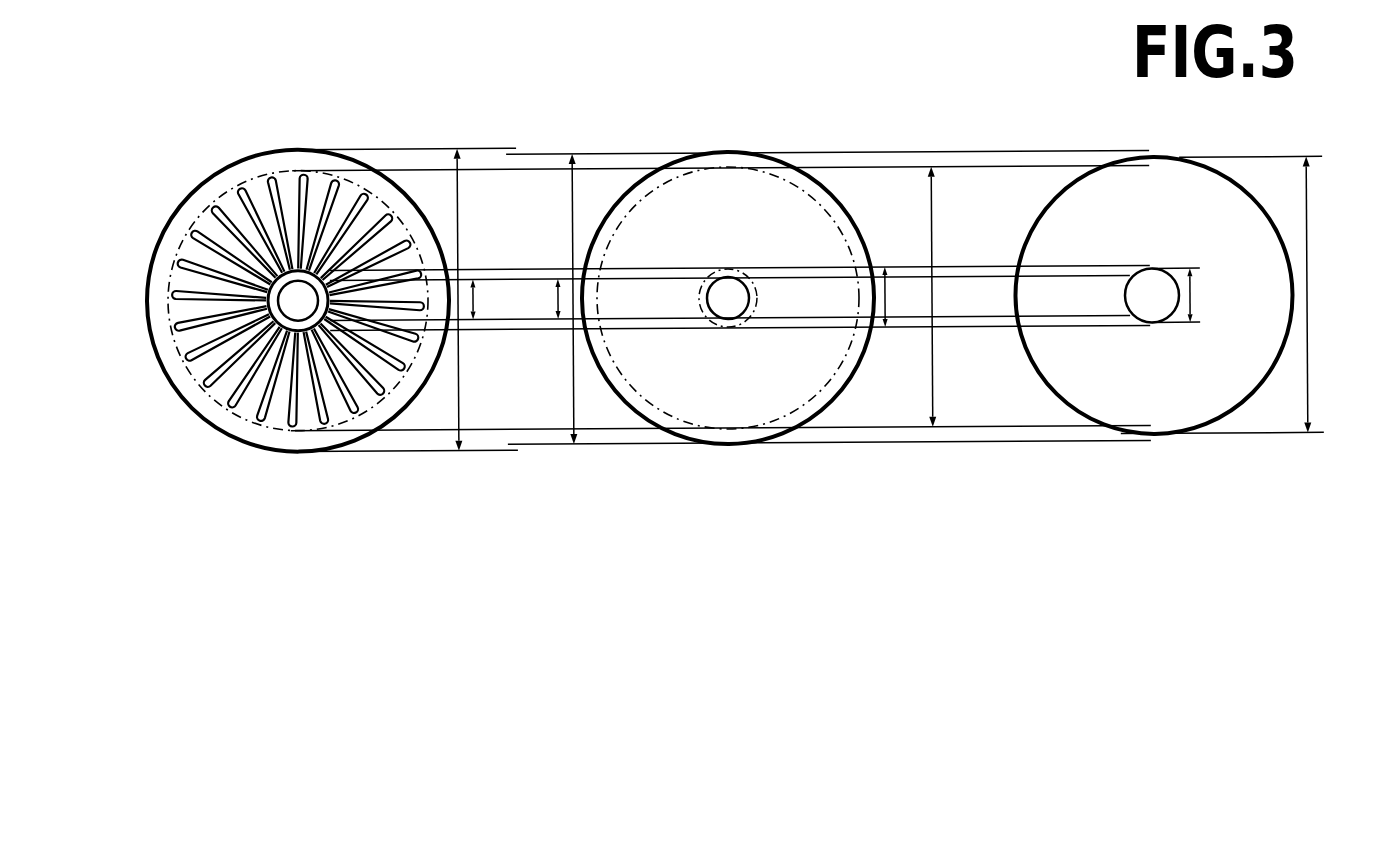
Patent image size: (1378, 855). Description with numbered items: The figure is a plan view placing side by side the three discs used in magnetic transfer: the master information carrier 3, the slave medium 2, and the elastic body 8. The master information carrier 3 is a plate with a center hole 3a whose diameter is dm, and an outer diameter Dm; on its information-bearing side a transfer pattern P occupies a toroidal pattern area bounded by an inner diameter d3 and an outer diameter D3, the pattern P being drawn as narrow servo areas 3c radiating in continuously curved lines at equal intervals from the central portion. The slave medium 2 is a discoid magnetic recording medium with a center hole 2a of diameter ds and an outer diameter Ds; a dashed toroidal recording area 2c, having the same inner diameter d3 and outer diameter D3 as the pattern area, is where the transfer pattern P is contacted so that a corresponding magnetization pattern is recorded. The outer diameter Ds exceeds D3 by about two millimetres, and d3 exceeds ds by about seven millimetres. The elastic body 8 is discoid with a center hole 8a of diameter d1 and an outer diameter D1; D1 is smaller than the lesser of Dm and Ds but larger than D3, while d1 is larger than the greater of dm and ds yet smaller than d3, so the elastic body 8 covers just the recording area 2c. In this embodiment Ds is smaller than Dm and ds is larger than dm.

The master information carrier 3 is at (197, 162).
The center hole 3a is at (292, 300).
The blades of impeller 3c is at (258, 184).
The transfer pattern P is at (188, 221).
The slave medium 2 is at (765, 136).
The center hole 2a is at (712, 297).
The recording area 2c is at (823, 229).
The elastic body 8 is at (1236, 169).
The center hole 8a is at (1135, 299).
The outer diameter of the master information carrier Dm is at (407, 299).
The diameter of the center hole of the master information carrier dm is at (493, 299).
The outer diameter of the slave medium Ds is at (828, 297).
The diameter of the center hole of the slave medium ds is at (543, 299).
The outer diameter of the pattern area / recording area D3 is at (720, 297).
The inner diameter of the pattern area / recording area d3 is at (902, 297).
The outer diameter of the elastic body D1 is at (1233, 294).
The diameter of the center hole of the elastic body d1 is at (1190, 295).